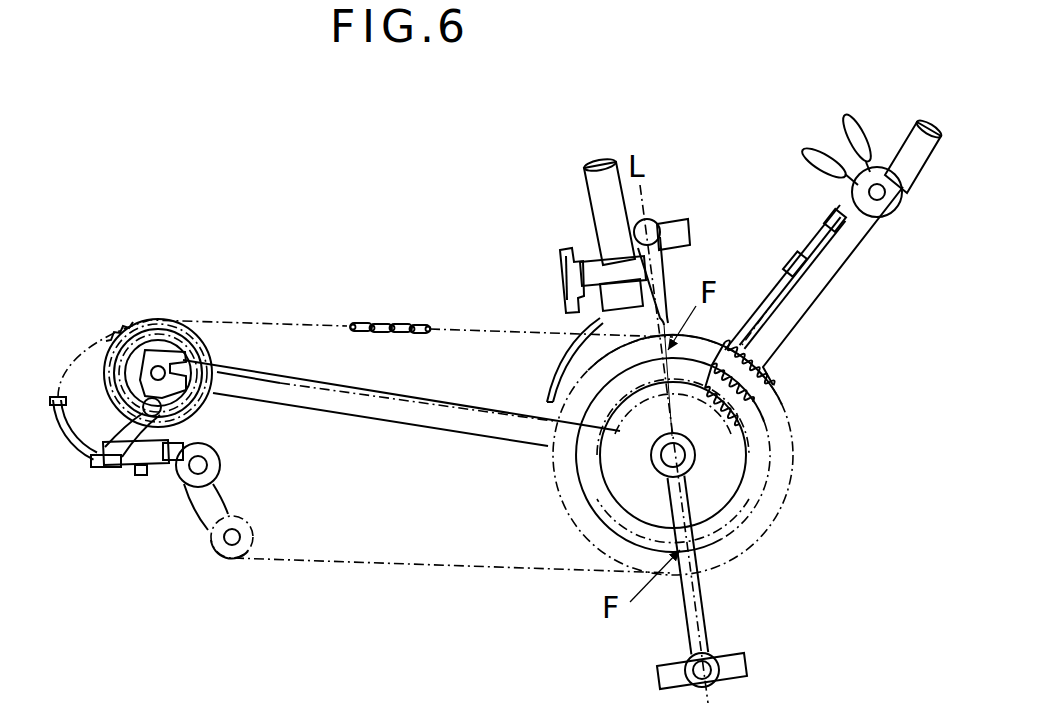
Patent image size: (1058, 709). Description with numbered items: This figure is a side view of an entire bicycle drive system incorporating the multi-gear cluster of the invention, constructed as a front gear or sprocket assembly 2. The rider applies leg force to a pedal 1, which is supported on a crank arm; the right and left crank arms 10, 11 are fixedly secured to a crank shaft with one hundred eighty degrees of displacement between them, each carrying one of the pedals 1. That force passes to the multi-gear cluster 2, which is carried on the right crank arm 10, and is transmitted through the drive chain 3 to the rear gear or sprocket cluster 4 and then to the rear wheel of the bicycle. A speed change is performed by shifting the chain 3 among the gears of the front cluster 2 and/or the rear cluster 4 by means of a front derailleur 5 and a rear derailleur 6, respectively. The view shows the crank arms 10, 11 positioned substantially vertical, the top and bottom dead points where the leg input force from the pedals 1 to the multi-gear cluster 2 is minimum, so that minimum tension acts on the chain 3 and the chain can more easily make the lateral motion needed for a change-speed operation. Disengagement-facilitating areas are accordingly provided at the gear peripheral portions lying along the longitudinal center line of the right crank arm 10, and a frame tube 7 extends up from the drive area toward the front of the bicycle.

The pedal 1 is at (677, 221).
The multi-gear cluster 2 is at (779, 377).
The drive chain 3 is at (392, 331).
The rear sprocket cluster 4 is at (122, 328).
The front derailleur 5 is at (555, 343).
The rear derailleur 6 is at (195, 522).
The down tube 7 is at (847, 262).
The right crank arm 10 is at (708, 620).
The left crank arm 11 is at (657, 266).